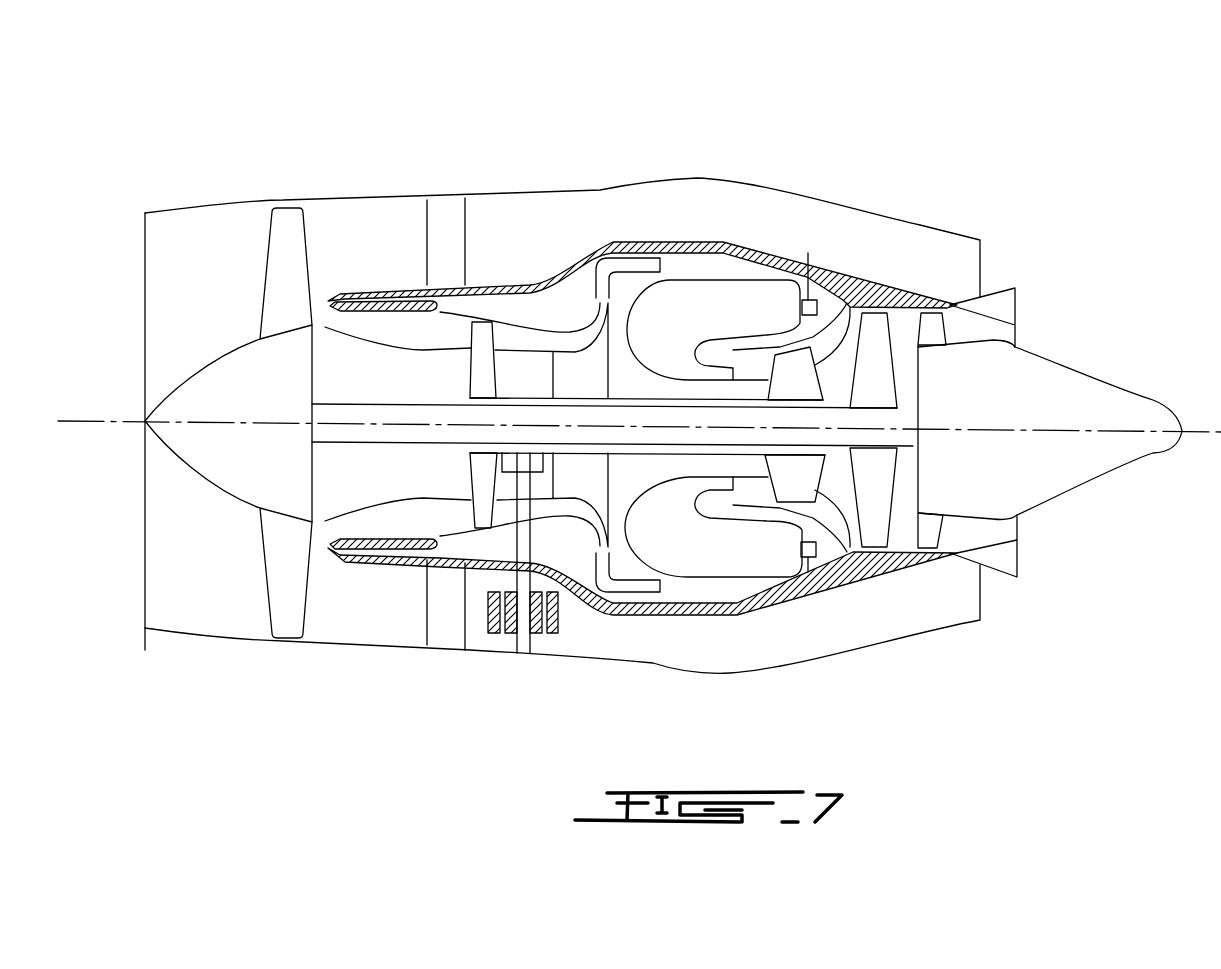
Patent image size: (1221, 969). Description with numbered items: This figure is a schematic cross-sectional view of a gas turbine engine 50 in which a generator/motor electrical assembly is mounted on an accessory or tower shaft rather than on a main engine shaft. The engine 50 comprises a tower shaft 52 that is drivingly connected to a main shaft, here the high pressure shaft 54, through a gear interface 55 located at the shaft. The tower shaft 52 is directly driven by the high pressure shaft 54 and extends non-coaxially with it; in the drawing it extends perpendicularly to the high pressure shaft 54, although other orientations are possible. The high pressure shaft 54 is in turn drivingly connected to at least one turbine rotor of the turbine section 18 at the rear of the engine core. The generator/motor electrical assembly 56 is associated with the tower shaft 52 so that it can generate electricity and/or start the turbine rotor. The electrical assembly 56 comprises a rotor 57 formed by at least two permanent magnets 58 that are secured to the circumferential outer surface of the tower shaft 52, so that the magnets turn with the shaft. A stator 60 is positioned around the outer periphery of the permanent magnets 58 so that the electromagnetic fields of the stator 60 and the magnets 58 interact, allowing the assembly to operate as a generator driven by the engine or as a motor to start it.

The gas turbine engine 50 is at (663, 379).
The turbine section 18 is at (840, 373).
The tower shaft 52 is at (522, 652).
The high pressure shaft 54 is at (648, 457).
The gear interface 55 is at (500, 459).
The generator/motor electrical assembly 56 is at (495, 647).
The rotor 57 is at (541, 636).
The permanent magnets 58 is at (500, 607).
The stator 60 is at (507, 657).